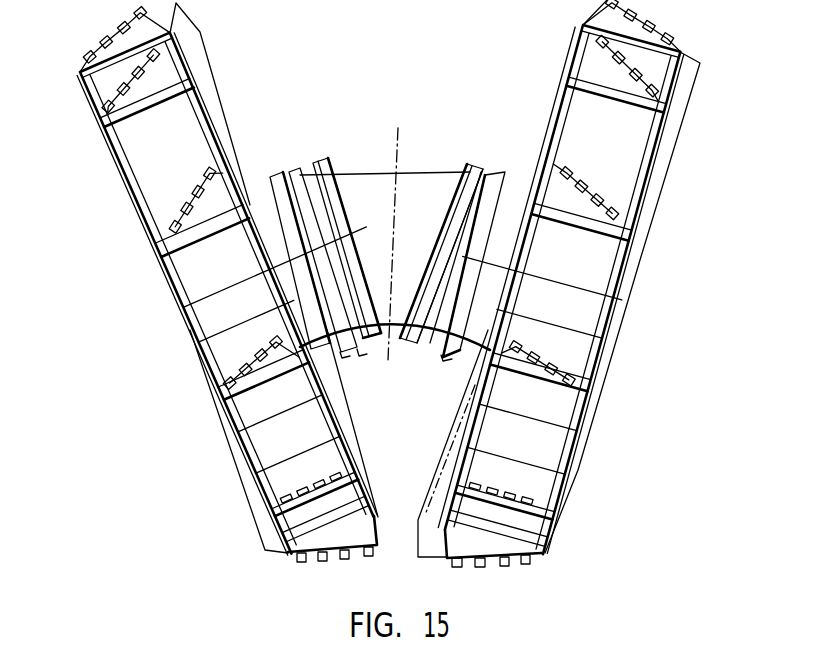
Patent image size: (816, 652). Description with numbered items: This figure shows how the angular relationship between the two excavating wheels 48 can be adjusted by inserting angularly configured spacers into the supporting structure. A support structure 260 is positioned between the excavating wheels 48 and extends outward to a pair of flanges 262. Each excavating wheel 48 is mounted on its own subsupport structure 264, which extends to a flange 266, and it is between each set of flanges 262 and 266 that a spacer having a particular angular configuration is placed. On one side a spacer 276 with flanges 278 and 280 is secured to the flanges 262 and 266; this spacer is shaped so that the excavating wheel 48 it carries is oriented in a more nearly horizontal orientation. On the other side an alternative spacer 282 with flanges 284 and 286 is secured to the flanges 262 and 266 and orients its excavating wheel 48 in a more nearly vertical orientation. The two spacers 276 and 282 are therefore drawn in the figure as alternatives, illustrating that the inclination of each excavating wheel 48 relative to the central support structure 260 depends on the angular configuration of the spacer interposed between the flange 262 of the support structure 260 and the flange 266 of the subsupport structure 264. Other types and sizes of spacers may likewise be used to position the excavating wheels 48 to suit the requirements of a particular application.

The excavating wheel 48 is at (125, 180).
The support structure 260 is at (415, 143).
The flange 262 is at (337, 203).
The subsupport structure 264 is at (265, 200).
The flange 266 is at (343, 352).
The spacer 276 is at (303, 188).
The flange 278 is at (363, 357).
The flange 280 is at (372, 348).
The spacer 282 is at (452, 287).
The flange 284 is at (480, 172).
The flange 286 is at (443, 357).